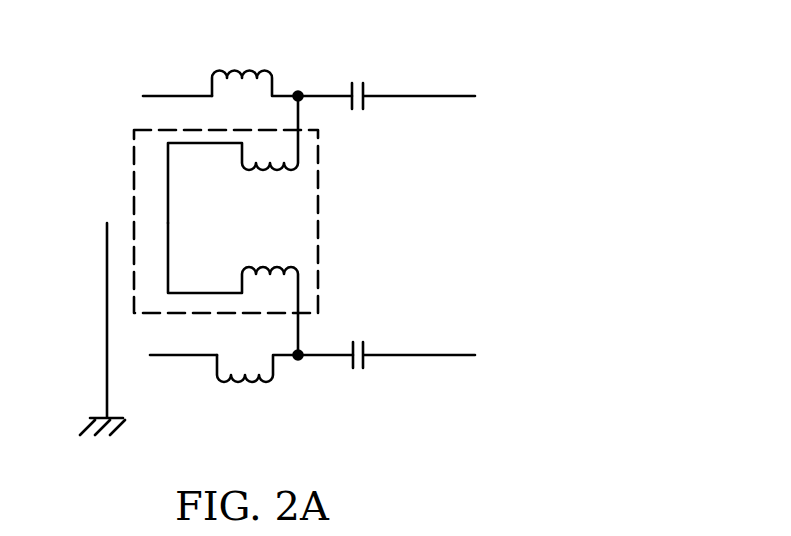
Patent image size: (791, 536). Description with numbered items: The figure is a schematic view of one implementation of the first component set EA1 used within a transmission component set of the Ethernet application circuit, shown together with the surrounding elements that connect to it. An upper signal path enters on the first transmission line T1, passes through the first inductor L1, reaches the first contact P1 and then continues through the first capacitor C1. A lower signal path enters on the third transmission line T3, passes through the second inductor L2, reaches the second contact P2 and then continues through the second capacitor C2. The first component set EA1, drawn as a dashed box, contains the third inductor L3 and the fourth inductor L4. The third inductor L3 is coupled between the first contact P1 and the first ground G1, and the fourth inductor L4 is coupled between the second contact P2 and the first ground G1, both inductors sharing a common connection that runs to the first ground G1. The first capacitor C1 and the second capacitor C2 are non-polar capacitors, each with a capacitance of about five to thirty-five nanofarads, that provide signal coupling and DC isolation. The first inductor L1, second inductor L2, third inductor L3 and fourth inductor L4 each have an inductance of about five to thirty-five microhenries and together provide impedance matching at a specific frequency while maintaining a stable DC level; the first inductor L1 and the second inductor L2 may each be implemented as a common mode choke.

The first transmission line T1 is at (173, 95).
The third transmission line T3 is at (172, 355).
The first component set EA1 is at (133, 195).
The first inductor L1 is at (282, 97).
The second inductor L2 is at (285, 356).
The third inductor L3 is at (233, 159).
The fourth inductor L4 is at (233, 289).
The first capacitor C1 is at (410, 115).
The second capacitor C2 is at (406, 343).
The first contact P1 is at (302, 83).
The second contact P2 is at (300, 372).
The first ground G1 is at (123, 331).